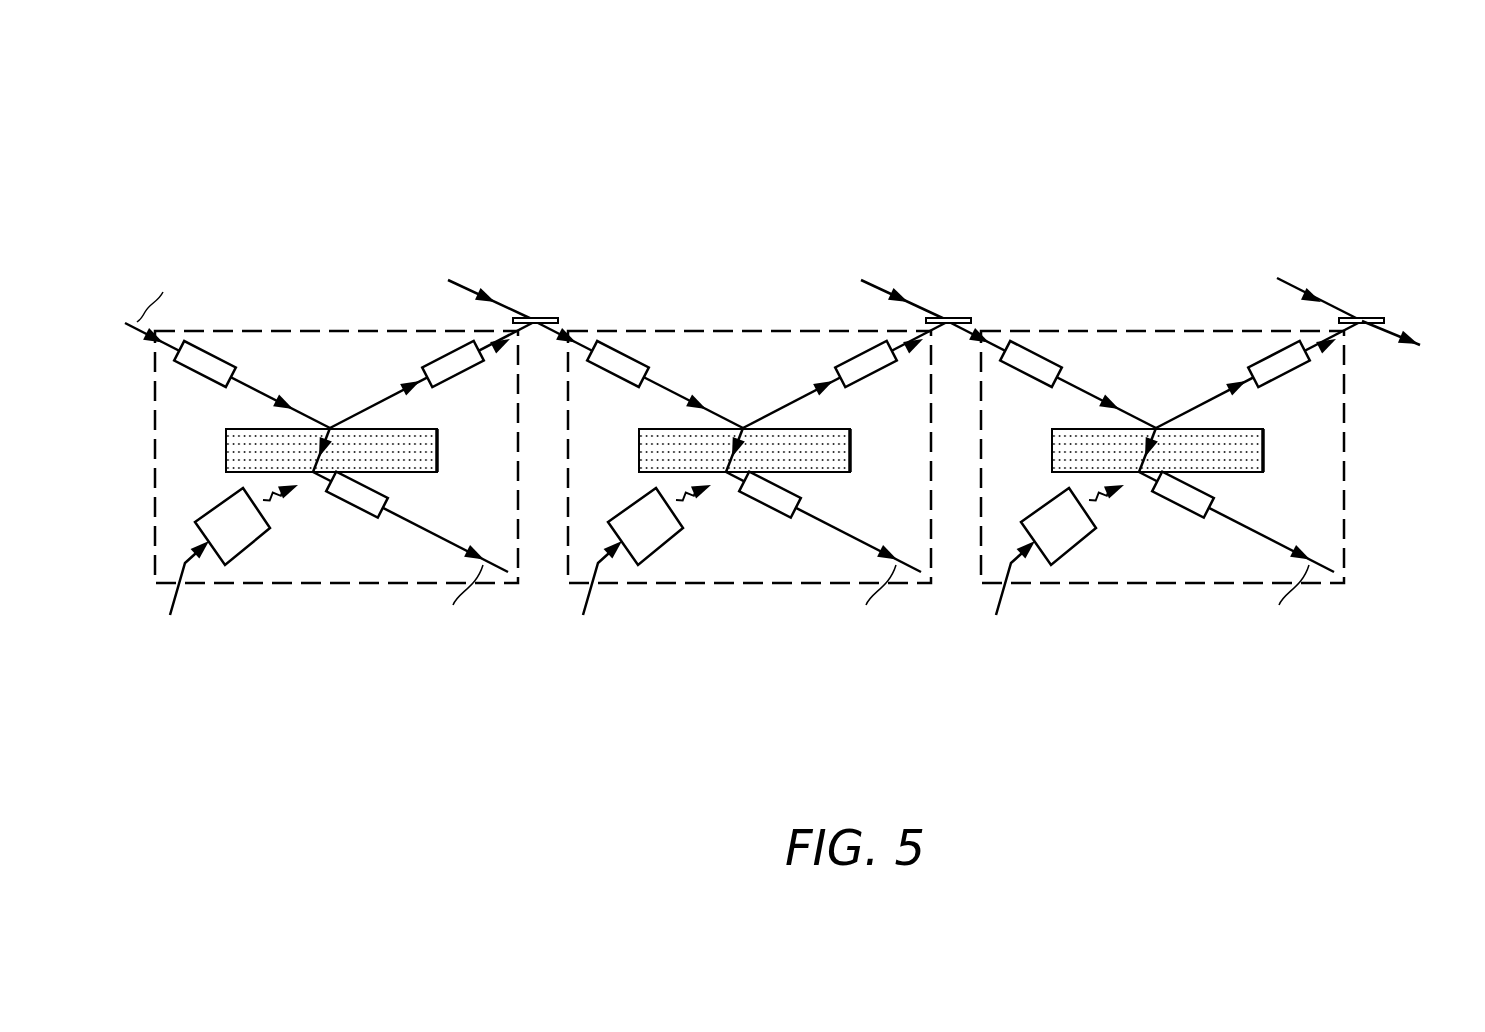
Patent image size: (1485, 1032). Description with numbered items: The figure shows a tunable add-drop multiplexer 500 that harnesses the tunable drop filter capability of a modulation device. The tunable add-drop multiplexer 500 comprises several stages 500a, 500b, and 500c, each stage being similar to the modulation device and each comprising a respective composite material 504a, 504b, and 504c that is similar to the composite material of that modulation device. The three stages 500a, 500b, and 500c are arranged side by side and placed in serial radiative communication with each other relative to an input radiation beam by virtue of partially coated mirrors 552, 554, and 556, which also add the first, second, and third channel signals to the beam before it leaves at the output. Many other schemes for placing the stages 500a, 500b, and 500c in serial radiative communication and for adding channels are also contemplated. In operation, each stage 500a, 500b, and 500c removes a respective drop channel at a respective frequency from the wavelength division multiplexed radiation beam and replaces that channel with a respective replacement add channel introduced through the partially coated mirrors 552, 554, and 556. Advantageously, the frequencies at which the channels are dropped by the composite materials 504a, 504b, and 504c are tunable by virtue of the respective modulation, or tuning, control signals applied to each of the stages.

The tunable add-drop multiplexer 500 is at (892, 148).
The stage 500a is at (355, 362).
The stage 500b is at (764, 455).
The stage 500c is at (1177, 452).
The composite material 504a is at (437, 452).
The composite material 504b is at (774, 440).
The composite material 504c is at (1188, 440).
The partially coated mirror 552 is at (537, 315).
The partially coated mirror 554 is at (958, 293).
The partially coated mirror 556 is at (1371, 293).